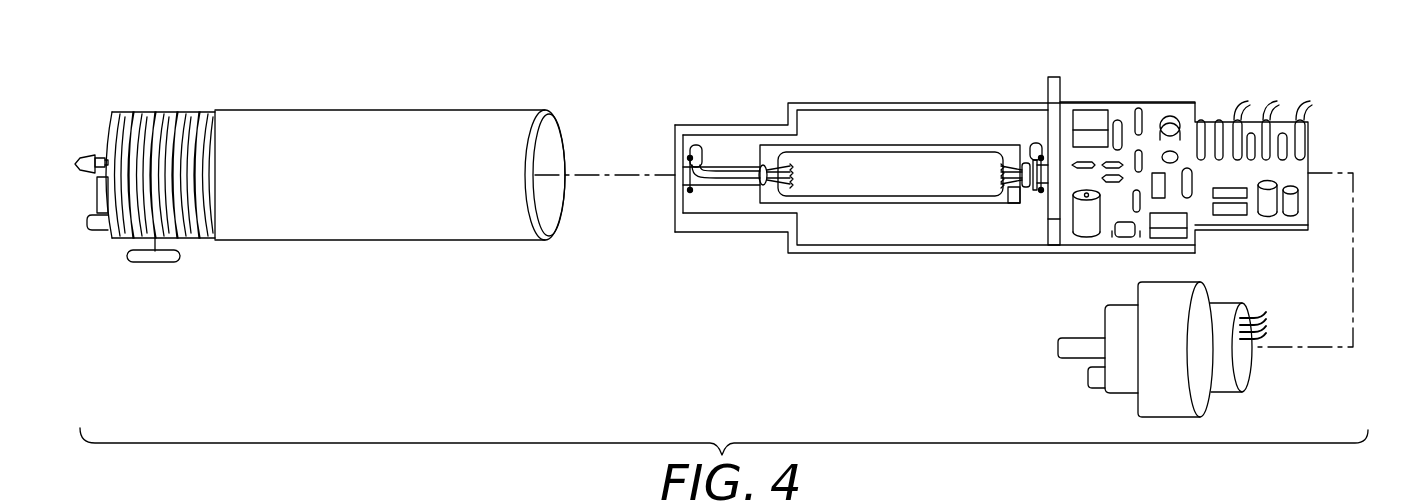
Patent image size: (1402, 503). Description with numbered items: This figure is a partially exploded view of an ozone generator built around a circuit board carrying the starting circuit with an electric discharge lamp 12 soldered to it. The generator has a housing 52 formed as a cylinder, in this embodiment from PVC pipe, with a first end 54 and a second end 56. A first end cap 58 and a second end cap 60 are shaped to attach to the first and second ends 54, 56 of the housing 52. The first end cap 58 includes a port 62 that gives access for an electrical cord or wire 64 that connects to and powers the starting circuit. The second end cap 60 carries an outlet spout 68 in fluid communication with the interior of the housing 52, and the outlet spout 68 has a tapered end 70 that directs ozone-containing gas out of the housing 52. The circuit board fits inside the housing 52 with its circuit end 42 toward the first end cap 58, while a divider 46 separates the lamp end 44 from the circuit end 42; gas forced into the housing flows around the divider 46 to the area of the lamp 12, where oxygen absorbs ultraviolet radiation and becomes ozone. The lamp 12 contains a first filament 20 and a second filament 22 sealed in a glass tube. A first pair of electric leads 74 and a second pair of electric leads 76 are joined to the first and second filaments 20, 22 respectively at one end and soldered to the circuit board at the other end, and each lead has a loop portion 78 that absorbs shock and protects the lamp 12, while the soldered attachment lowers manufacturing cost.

The electric discharge lamp 12 is at (840, 150).
The first filament 20 is at (1008, 190).
The second filament 22 is at (783, 203).
The circuit end 42 is at (1192, 100).
The lamp end 44 is at (722, 125).
The divider 46 is at (1055, 92).
The housing 52 is at (405, 110).
The first end 54 is at (545, 122).
The second end 56 is at (215, 110).
The first end cap 58 is at (1167, 282).
The second end cap 60 is at (122, 111).
The port 62 is at (1118, 307).
The electrical cord or wire 64 is at (1073, 338).
The outlet spout 68 is at (87, 155).
The tapered end 70 is at (96, 177).
The first pair of electric leads 74 is at (1027, 173).
The second pair of electric leads 76 is at (708, 175).
The loop portion 78 is at (690, 156).